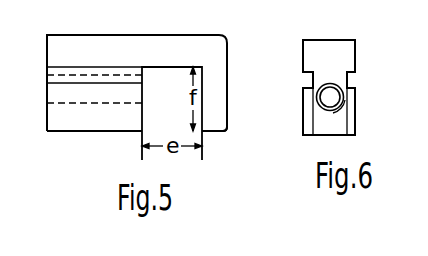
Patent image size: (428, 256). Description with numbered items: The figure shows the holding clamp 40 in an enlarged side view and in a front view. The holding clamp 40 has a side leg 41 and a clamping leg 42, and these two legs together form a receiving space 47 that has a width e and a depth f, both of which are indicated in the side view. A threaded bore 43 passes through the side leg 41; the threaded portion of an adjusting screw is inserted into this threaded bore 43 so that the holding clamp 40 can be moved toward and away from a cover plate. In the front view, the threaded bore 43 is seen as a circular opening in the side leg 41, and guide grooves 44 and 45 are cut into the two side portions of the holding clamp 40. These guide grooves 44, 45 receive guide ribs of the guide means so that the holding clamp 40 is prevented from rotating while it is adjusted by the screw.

In FIG. 5, the holding clamp 40 is at (137, 43).
In FIG. 6, the holding clamp 40 is at (343, 53).
In FIG. 5, the side leg 41 is at (77, 118).
In FIG. 5, the clamping leg 42 is at (219, 118).
In FIG. 5, the threaded bore 43 is at (53, 97).
In FIG. 6, the threaded bore 43 is at (317, 97).
In FIG. 6, the guide groove 44 is at (307, 83).
In FIG. 6, the guide groove 45 is at (355, 80).
In FIG. 5, the receiving space 47 is at (152, 113).